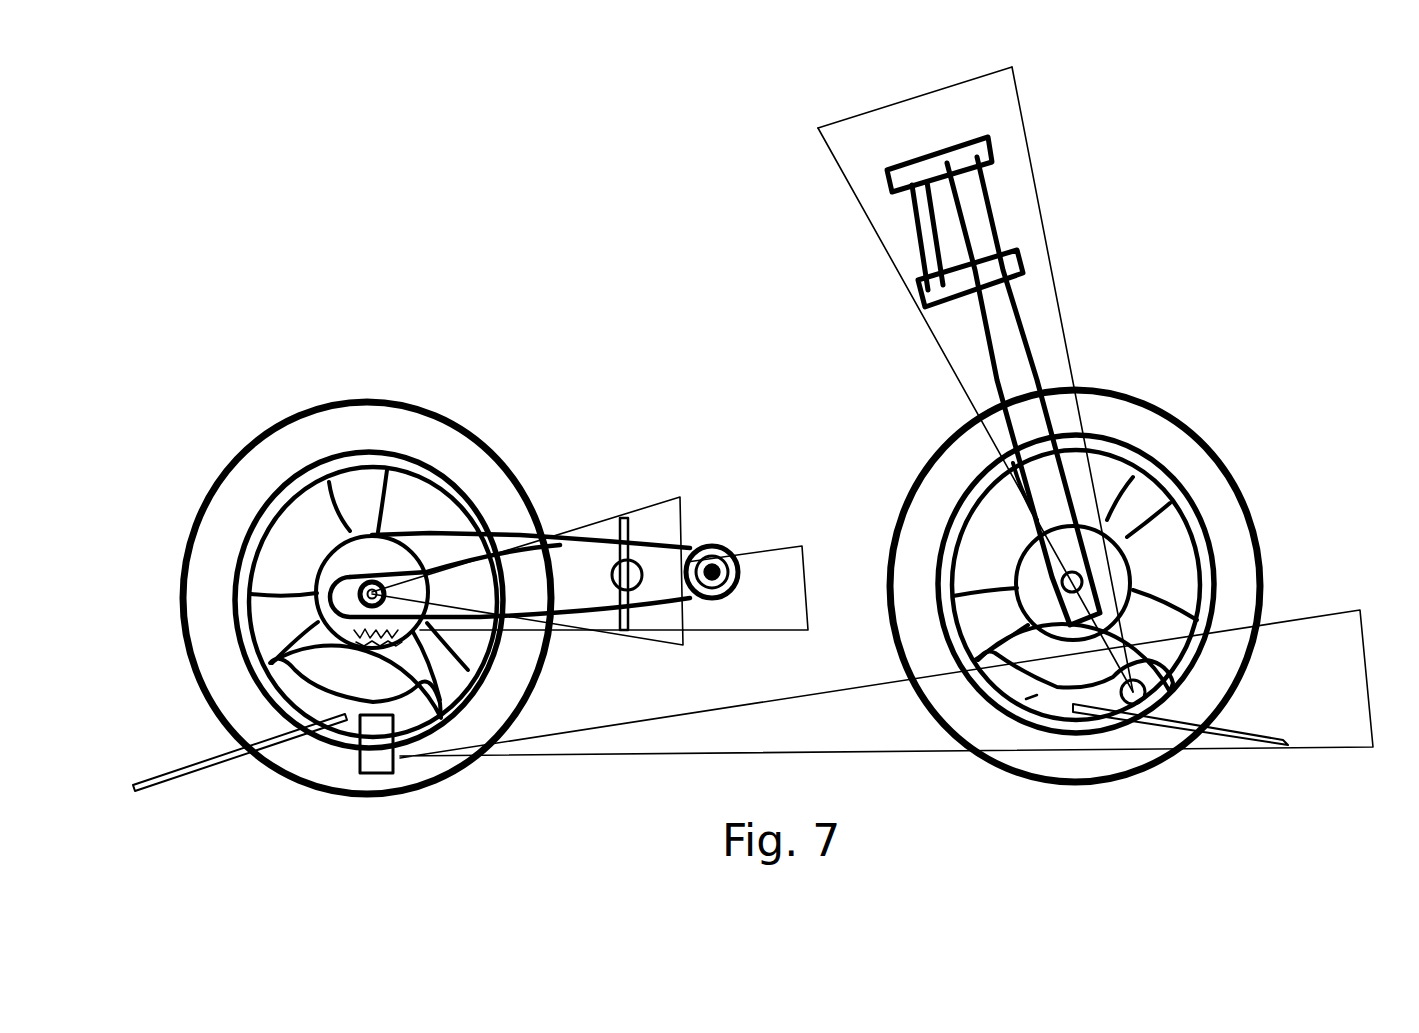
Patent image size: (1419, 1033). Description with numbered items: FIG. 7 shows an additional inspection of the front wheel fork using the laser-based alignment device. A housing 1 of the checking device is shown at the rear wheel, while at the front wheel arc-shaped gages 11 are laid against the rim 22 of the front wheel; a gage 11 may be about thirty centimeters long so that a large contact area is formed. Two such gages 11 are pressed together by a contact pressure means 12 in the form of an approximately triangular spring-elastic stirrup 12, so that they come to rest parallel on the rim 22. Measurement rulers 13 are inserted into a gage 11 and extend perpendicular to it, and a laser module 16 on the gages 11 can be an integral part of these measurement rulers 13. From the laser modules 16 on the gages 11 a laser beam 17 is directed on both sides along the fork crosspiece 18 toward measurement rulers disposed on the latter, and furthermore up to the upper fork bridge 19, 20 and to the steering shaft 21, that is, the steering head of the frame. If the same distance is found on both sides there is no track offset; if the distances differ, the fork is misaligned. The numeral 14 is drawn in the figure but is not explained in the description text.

The housing 1 is at (340, 642).
The arc-shaped gage 11 is at (1052, 710).
The spring-elastic stirrup 12 is at (208, 760).
The measurement ruler 13 is at (618, 518).
The block 14 is at (377, 753).
The laser module 16 is at (1137, 704).
The laser beam 17 is at (955, 387).
The fork crosspiece 18 is at (1020, 380).
The upper fork bridge 19 is at (1023, 260).
The upper fork bridge 20 is at (995, 152).
The steering shaft 21 is at (927, 227).
The rim 22 is at (1145, 468).